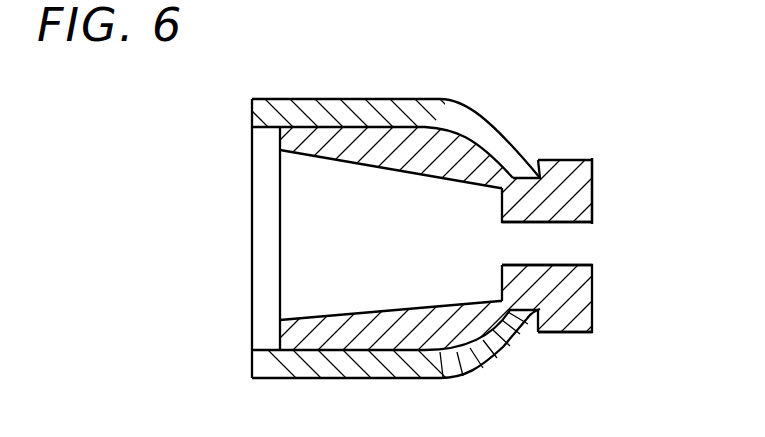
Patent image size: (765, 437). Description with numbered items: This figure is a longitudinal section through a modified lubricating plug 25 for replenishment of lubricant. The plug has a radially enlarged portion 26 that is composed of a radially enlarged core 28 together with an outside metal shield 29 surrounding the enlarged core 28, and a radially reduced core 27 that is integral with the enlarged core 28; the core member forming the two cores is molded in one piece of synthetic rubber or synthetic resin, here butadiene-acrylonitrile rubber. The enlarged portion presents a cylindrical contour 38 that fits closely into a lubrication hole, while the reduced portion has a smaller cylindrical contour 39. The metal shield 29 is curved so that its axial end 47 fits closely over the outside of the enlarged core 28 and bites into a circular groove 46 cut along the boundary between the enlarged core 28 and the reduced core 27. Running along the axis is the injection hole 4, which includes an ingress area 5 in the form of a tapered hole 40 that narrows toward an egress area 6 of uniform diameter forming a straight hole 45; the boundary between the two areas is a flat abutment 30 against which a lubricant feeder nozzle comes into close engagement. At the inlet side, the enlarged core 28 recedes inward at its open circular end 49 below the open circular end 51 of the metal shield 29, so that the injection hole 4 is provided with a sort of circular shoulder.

The injection hole 4 is at (379, 244).
The ingress area 5 is at (312, 320).
The egress area 6 is at (575, 238).
The modified lubricating plug 25 is at (497, 106).
The radially enlarged portion 26 is at (365, 99).
The radially reduced core 27 is at (568, 176).
The radially enlarged core 28 is at (446, 142).
The metal shield 29 is at (511, 137).
The flat abutment 30 is at (500, 283).
The cylindrical contour 38 is at (389, 100).
The cylindrical contour 39 is at (593, 160).
The tapered hole 40 is at (350, 161).
The straight hole 45 is at (562, 265).
The circular groove 46 is at (547, 332).
The axial end 47 is at (516, 167).
The open circular end 49 is at (280, 337).
The open circular end 51 is at (252, 116).